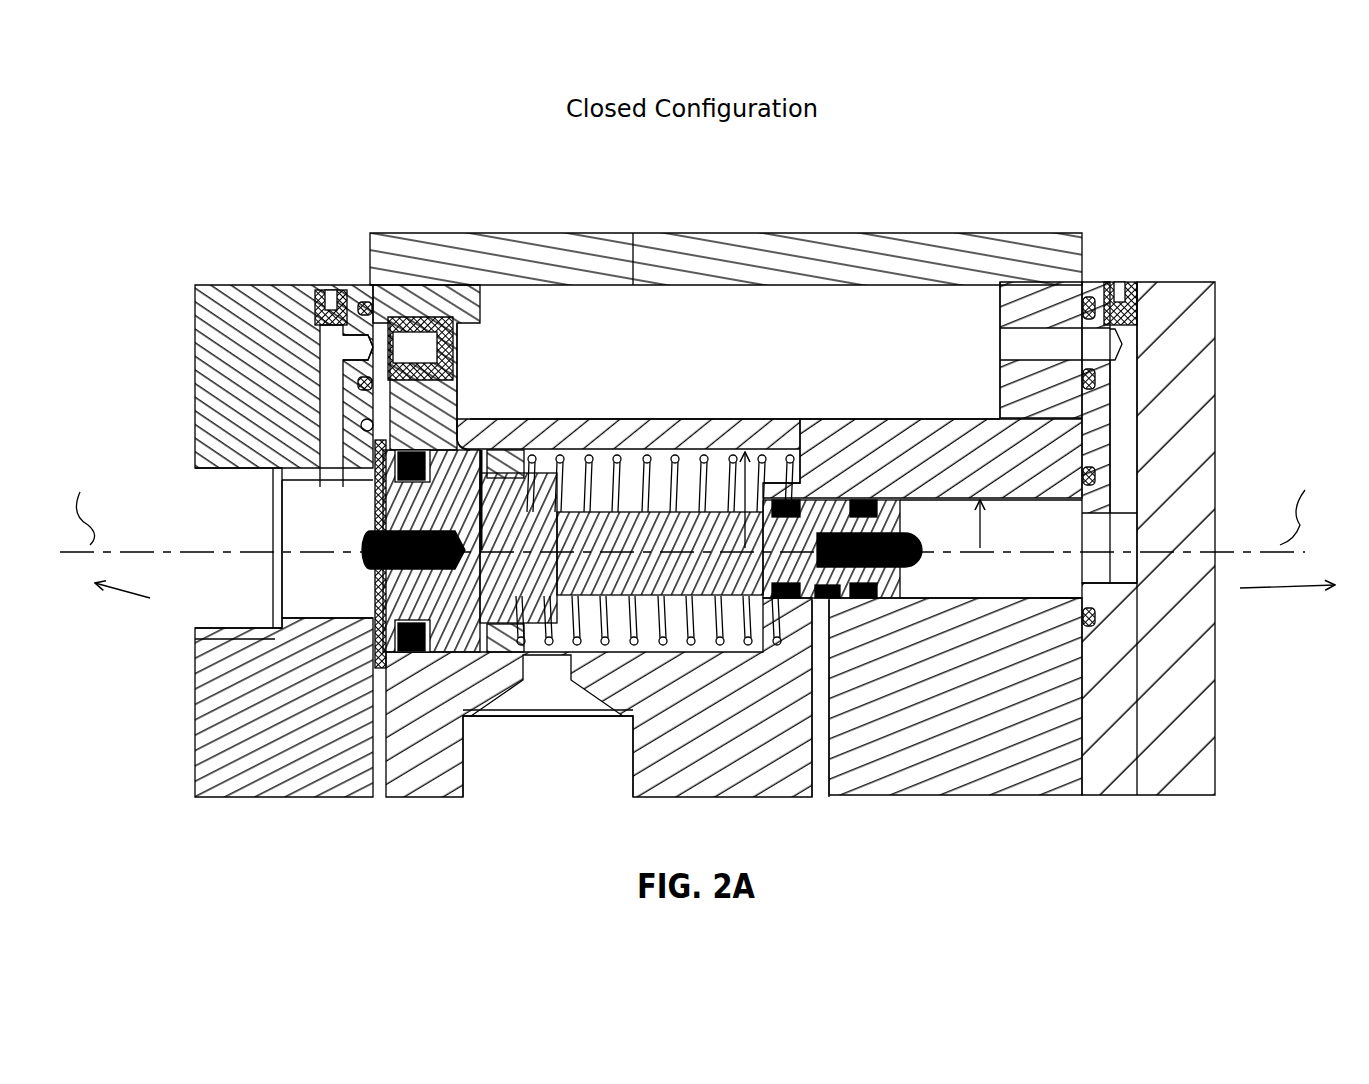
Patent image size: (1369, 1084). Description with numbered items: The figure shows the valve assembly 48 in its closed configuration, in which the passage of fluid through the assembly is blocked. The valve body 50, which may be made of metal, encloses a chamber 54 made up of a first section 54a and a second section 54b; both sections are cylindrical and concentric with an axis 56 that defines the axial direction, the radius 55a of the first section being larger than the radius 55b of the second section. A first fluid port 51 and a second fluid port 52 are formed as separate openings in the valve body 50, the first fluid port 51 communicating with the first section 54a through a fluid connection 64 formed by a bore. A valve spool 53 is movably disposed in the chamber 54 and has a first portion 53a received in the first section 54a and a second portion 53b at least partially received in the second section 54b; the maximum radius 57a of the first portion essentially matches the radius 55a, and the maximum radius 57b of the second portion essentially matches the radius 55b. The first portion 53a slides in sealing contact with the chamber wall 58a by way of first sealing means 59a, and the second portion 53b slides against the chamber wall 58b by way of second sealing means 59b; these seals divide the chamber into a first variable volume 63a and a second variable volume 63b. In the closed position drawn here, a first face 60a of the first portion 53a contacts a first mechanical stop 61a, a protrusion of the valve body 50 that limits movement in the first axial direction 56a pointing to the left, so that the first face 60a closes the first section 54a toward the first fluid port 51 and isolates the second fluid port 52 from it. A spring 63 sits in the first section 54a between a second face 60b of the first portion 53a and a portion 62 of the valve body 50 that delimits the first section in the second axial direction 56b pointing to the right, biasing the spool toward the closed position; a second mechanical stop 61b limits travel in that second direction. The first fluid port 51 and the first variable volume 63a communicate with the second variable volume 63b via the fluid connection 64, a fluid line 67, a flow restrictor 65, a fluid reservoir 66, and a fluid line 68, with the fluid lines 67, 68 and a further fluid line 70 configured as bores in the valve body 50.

The valve assembly 48 is at (190, 145).
The valve body 50 is at (975, 797).
The first fluid port 51 is at (200, 560).
The second fluid port 52 is at (560, 793).
The valve spool 53 is at (680, 590).
The first portion of the valve spool 53a is at (543, 520).
The second portion of the valve spool 53b is at (705, 520).
The chamber 54 is at (658, 478).
The first section of the chamber 54a is at (650, 620).
The second section of the chamber 54b is at (1040, 580).
The radius of the first section 55a is at (758, 450).
The radius of the second section 55b is at (992, 540).
The axis 56 is at (699, 493).
The first axial direction 56a is at (130, 605).
The second axial direction 56b is at (1240, 592).
The maximum radius of the first portion 57a is at (482, 500).
The maximum radius of the second portion 57b is at (835, 510).
The chamber wall 58a is at (478, 437).
The chamber wall 58b is at (917, 598).
The first sealing means 59a is at (478, 547).
The second sealing means 59b is at (859, 598).
The first face 60a is at (371, 500).
The second face 60b is at (527, 648).
The first mechanical stop 61a is at (375, 462).
The second mechanical stop 61b is at (1100, 495).
The portion of the valve body 62 is at (790, 465).
The spring 63 is at (570, 655).
The first variable volume 63a is at (365, 520).
The second variable volume 63b is at (945, 520).
The fluid connection 64 is at (322, 600).
The flow restrictor 65 is at (413, 317).
The fluid reservoir 66 is at (920, 390).
The fluid line 67 is at (330, 395).
The fluid line 68 is at (1120, 420).
The fluid line 70 is at (818, 770).